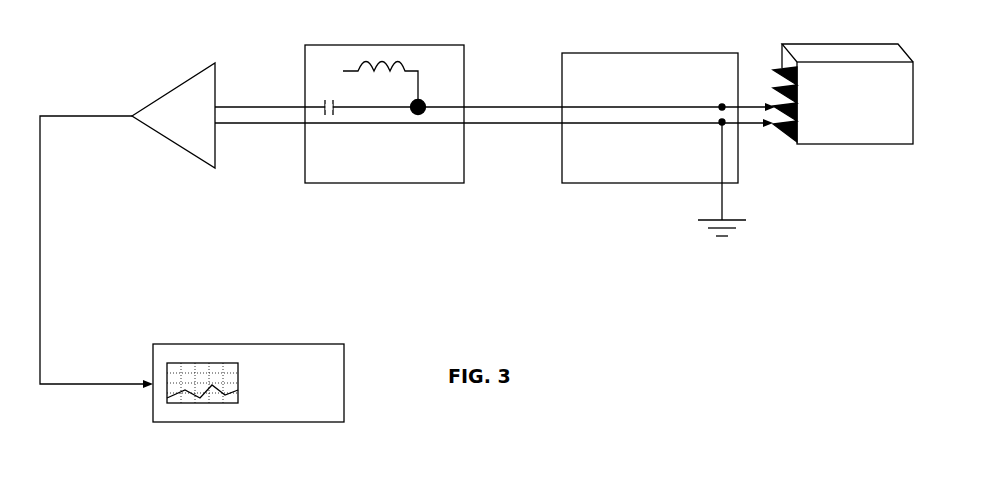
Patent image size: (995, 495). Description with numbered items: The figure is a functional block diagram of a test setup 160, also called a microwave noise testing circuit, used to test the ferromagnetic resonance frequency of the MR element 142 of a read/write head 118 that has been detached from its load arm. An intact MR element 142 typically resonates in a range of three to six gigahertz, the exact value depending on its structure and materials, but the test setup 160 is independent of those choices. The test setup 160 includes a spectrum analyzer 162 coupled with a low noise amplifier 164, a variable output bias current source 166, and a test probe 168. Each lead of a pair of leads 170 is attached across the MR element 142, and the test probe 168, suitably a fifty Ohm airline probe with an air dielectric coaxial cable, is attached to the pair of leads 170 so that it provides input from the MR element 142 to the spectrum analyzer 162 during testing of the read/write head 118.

The read/write head 118 is at (838, 144).
The MR element 142 is at (768, 93).
The test setup 160 is at (368, 38).
The spectrum analyzer 162 is at (345, 344).
The low noise amplifier 164 is at (188, 155).
The variable output bias current source 166 is at (318, 183).
The test probe 168 is at (643, 183).
The pair of leads 170 is at (542, 107).